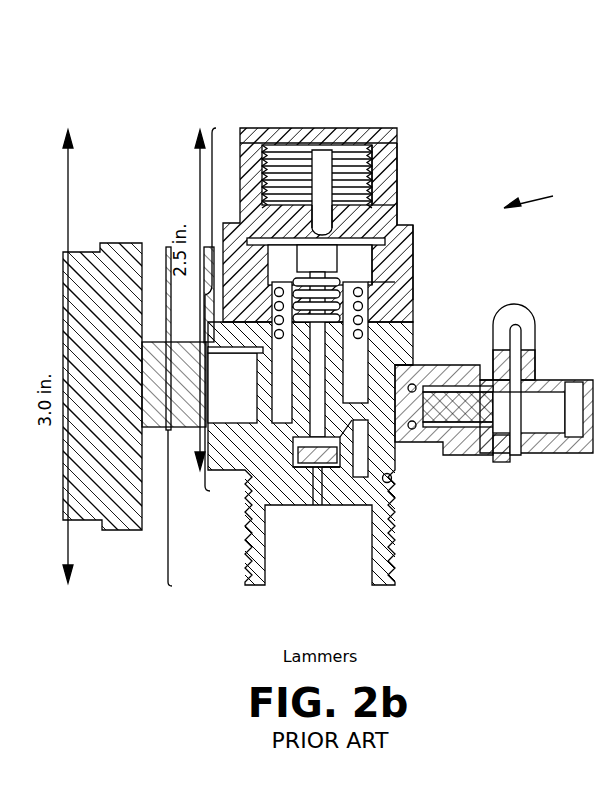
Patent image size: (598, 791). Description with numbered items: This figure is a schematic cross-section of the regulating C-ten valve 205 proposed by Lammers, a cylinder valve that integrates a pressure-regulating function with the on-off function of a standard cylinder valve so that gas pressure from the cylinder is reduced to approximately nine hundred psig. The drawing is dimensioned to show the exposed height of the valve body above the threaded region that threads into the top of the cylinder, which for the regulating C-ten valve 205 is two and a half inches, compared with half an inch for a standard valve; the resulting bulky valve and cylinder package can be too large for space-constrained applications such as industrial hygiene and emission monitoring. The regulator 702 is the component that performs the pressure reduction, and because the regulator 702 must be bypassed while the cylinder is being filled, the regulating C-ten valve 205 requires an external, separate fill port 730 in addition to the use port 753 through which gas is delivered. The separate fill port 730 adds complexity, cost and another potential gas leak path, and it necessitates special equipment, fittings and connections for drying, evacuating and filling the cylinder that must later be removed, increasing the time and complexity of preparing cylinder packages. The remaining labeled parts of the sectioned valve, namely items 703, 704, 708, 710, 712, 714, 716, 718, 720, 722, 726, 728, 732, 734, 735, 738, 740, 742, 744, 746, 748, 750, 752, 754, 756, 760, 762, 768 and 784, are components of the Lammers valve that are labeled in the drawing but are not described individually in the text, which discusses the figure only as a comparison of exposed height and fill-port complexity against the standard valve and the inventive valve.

The regulating C-10 valve 205 is at (546, 197).
The regulator 702 is at (168, 290).
The bracket plate 703 is at (194, 323).
The valve housing 704 is at (213, 220).
The threaded port 708 is at (395, 554).
The housing wall 710 is at (390, 282).
The valve seat 712 is at (303, 473).
The housing shoulder 714 is at (385, 267).
The pin housing 716 is at (413, 330).
The coil spring 718 is at (369, 284).
The housing side wall 720 is at (395, 150).
The thread bore shoulder 722 is at (363, 196).
The separating plate 726 is at (331, 240).
The top cap 728 is at (397, 134).
The fill port 730 is at (558, 364).
The nut 732 is at (392, 346).
The O-ring 734 is at (391, 480).
The valve pin 735 is at (324, 473).
The thread 738 is at (381, 494).
The valve head 740 is at (323, 473).
The housing flange 742 is at (375, 246).
The pin 744 is at (398, 352).
The left coil spring 746 is at (265, 350).
The housing step 748 is at (383, 380).
The lower stem 750 is at (352, 420).
The valve stem 752 is at (317, 399).
The use port 753 is at (378, 145).
The spring 754 is at (343, 301).
The valve disc 756 is at (310, 457).
The chamber wall 760 is at (353, 257).
The stem guide 762 is at (343, 217).
The thread wall 768 is at (375, 183).
The stem shoulder 784 is at (346, 208).